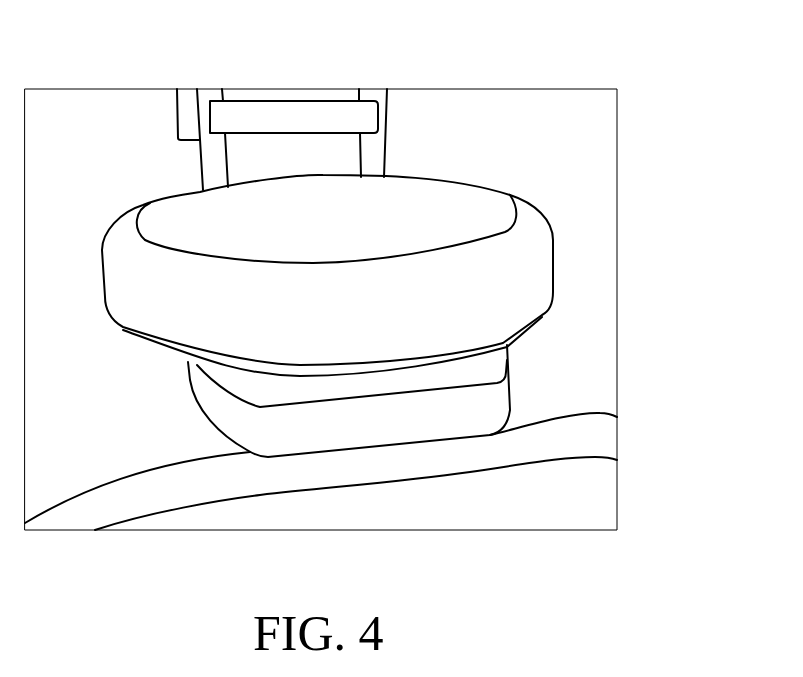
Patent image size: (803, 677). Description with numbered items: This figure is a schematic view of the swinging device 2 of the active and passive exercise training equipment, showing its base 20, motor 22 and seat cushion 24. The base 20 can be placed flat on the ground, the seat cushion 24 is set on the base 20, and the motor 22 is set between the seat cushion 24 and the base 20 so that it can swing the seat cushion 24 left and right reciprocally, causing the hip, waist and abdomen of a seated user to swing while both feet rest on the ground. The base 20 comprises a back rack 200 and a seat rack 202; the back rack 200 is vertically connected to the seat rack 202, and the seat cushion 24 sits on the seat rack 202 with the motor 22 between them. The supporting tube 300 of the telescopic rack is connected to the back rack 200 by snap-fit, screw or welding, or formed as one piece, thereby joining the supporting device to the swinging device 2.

The swinging device 2 is at (90, 247).
The base 20 is at (115, 468).
The motor 22 is at (487, 417).
The seat cushion 24 is at (468, 208).
The back rack 200 is at (340, 116).
The seat rack 202 is at (590, 443).
The supporting tube 300 is at (182, 113).